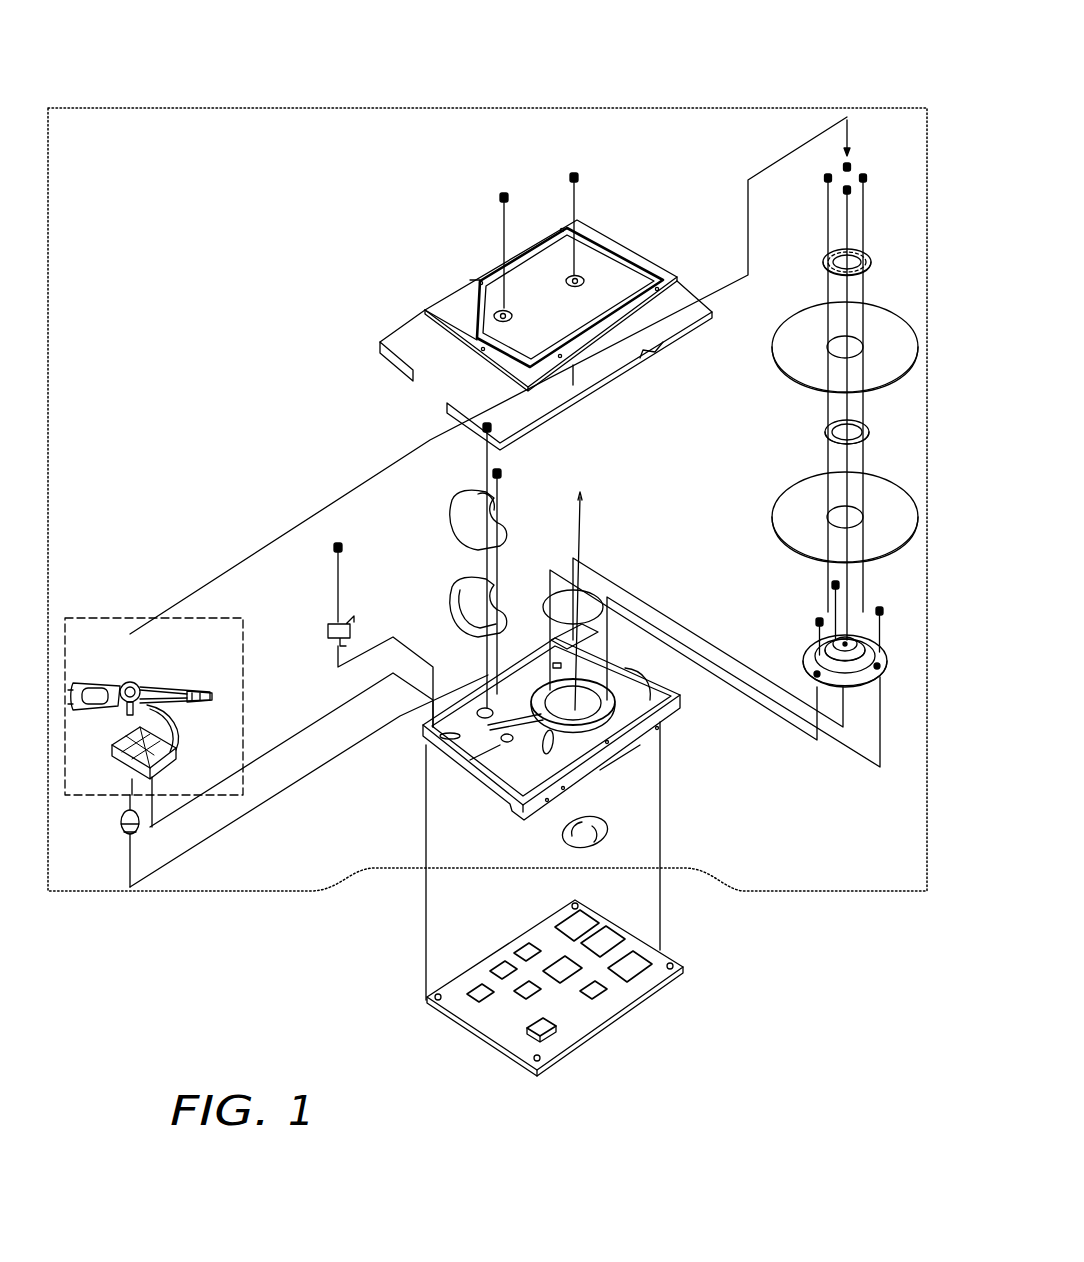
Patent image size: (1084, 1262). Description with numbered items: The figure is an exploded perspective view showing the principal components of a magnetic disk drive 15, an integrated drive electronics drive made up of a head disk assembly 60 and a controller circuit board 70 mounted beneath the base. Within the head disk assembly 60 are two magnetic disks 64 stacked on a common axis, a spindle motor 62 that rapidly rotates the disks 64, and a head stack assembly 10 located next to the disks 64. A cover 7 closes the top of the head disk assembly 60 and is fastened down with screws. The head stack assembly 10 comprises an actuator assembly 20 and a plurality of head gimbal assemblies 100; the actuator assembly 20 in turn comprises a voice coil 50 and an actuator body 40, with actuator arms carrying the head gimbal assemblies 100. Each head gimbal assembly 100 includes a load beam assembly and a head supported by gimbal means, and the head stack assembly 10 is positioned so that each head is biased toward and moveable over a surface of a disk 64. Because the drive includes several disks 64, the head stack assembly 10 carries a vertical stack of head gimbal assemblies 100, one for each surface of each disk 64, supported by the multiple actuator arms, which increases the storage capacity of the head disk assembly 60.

The magnetic disk drive 15 is at (296, 78).
The cover 7 is at (441, 297).
The head stack assembly 10 is at (99, 618).
The actuator assembly 20 is at (72, 678).
The actuator body 40 is at (139, 682).
The voice coil 50 is at (115, 712).
The head gimbal assembly 100 is at (192, 690).
The head disk assembly 60 is at (767, 892).
The spindle motor 62 is at (808, 656).
The magnetic disk 64 is at (786, 382).
The controller circuit board 70 is at (600, 1027).